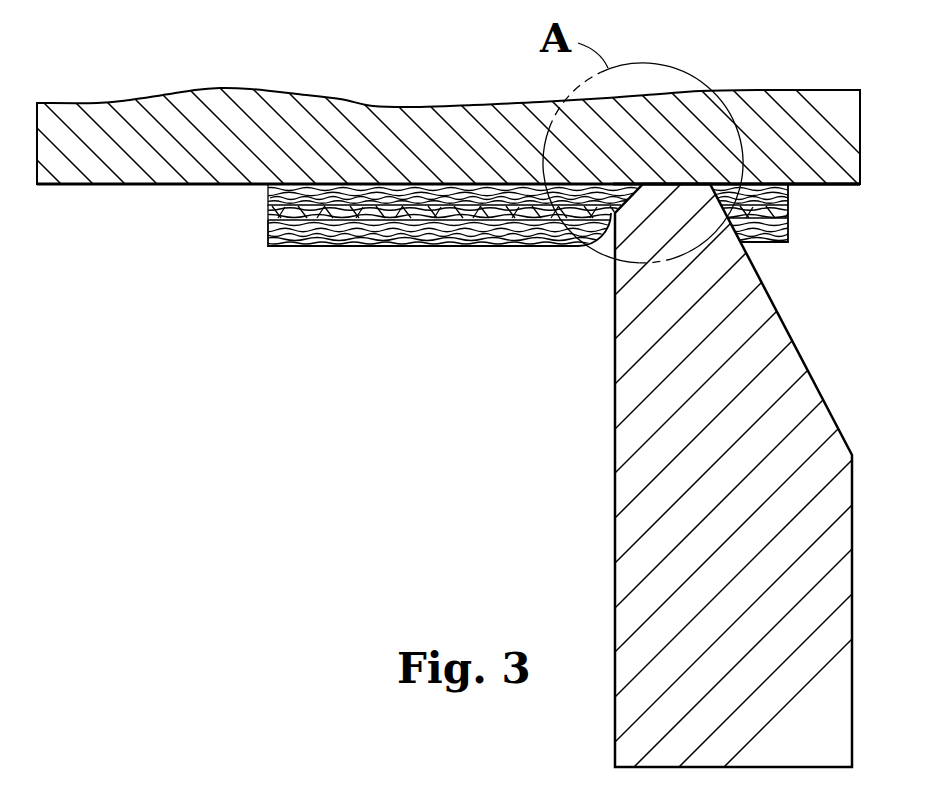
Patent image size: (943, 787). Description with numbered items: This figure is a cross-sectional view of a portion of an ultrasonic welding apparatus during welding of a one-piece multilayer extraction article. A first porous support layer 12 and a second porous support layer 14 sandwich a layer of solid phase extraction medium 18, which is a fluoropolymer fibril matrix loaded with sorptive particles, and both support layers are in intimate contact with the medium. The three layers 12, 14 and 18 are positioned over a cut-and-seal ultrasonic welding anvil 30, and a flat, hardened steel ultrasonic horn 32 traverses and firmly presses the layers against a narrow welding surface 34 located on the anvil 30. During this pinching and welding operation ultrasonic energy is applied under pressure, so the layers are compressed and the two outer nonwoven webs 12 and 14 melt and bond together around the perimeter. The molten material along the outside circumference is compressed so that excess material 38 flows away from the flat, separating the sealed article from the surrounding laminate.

The first porous support layer 12 is at (267, 191).
The second porous support layer 14 is at (320, 238).
The solid phase extraction medium 18 is at (484, 206).
The cut-and-seal ultrasonic welding anvil 30 is at (612, 505).
The ultrasonic horn 32 is at (95, 170).
The welding surface 34 is at (694, 183).
The excess material 38 is at (779, 249).